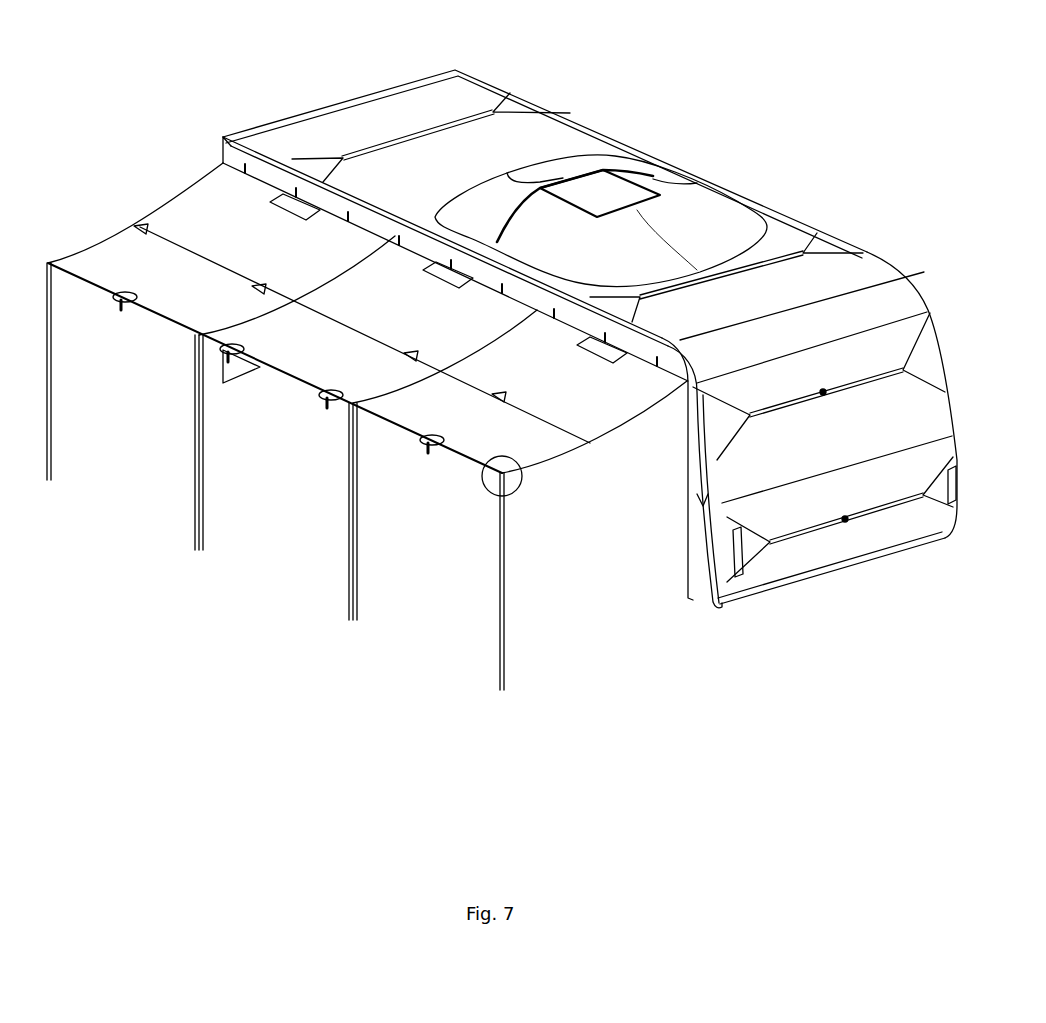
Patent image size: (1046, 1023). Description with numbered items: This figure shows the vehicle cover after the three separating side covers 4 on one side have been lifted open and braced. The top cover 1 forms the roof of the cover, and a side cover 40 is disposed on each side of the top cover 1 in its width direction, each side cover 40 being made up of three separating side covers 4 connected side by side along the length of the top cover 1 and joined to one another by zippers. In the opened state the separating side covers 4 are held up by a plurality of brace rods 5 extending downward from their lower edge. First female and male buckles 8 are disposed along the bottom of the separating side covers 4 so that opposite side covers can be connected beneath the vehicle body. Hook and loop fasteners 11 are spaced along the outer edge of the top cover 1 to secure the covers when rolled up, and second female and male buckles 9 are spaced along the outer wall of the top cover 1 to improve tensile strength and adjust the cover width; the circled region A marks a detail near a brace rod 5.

The top cover 1 is at (532, 131).
The separating side cover 4 is at (209, 221).
The brace rod 5 is at (508, 604).
The first female and male buckle 8 is at (324, 404).
The second female and male buckle 9 is at (425, 129).
The hook and loop fastener 11 is at (294, 193).
The side cover 40 is at (367, 423).
The detail region A is at (521, 494).